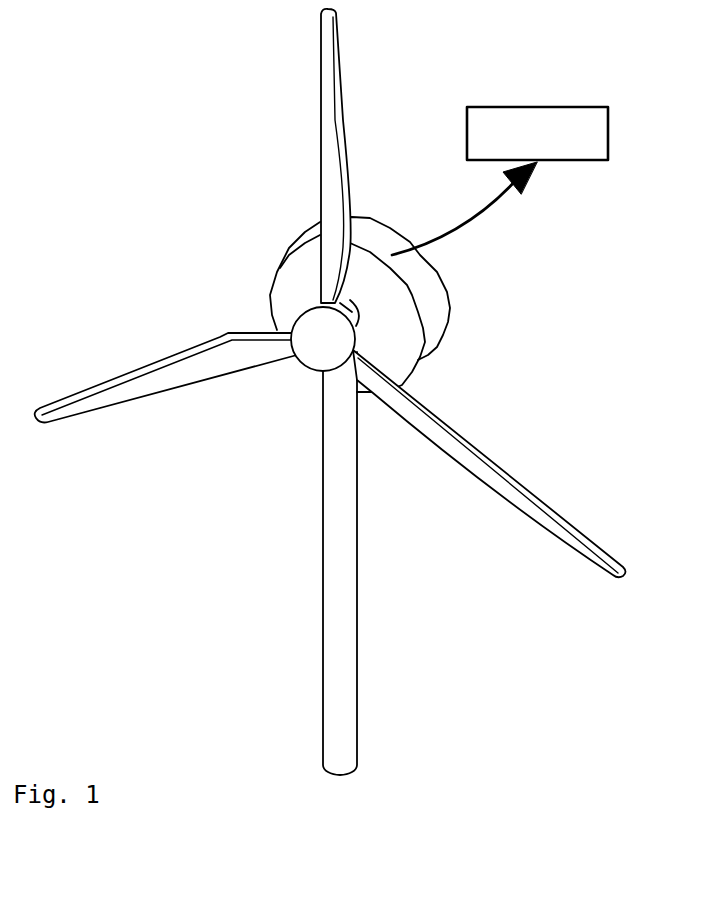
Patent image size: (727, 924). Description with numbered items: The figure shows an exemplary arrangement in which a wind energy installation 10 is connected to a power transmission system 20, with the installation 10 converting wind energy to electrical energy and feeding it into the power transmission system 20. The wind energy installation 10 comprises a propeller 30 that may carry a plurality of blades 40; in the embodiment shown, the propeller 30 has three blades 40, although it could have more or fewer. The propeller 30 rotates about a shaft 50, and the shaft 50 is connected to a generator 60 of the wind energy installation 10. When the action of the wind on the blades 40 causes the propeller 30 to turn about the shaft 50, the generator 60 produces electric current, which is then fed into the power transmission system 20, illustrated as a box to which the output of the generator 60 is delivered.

The wind energy installation 10 is at (340, 477).
The power transmission system 20 is at (547, 105).
The propeller 30 is at (318, 350).
The blades 40 is at (190, 360).
The shaft 50 is at (353, 313).
The generator 60 is at (427, 277).